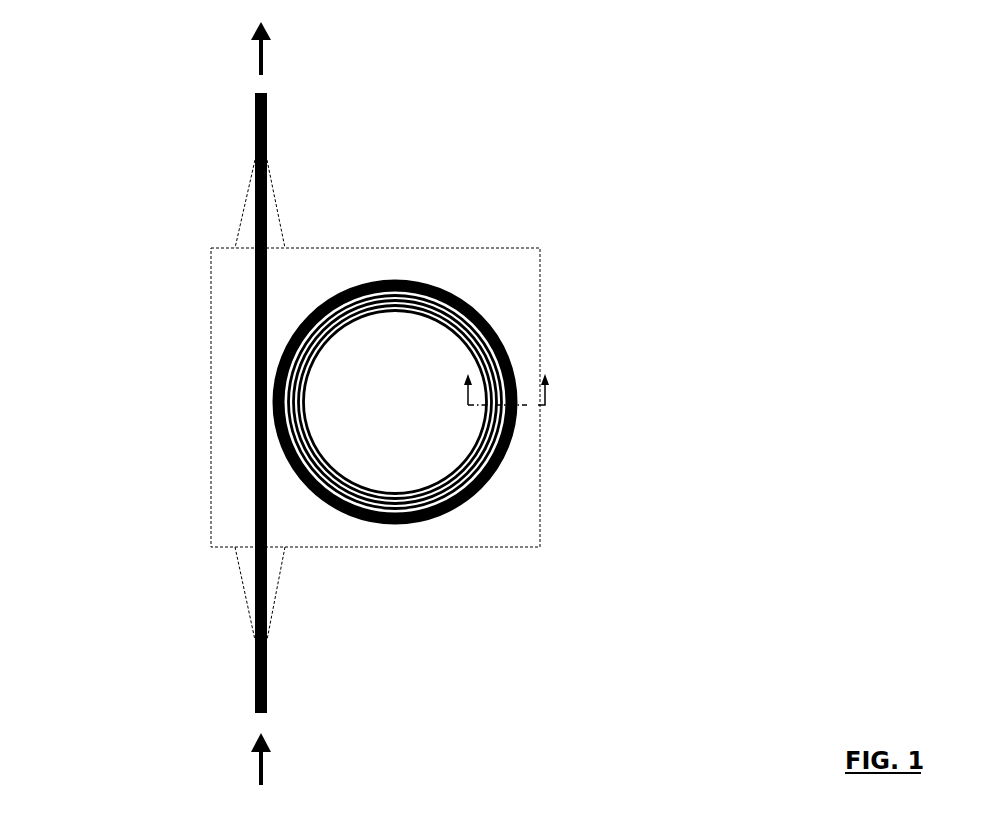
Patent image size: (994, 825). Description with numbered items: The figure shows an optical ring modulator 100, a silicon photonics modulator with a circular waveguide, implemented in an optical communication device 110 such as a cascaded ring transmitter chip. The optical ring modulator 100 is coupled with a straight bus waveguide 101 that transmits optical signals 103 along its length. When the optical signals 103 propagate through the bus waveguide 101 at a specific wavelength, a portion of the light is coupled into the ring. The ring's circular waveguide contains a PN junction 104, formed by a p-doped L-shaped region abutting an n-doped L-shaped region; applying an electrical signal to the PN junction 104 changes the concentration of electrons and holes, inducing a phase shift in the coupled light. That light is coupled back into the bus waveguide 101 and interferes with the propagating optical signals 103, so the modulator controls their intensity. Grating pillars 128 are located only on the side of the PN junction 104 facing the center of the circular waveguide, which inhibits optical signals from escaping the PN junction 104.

The optical communication device 110 is at (121, 127).
The optical ring modulator 100 is at (537, 302).
The bus waveguide 101 is at (265, 656).
The optical signals 103 is at (261, 59).
The PN junction 104 is at (443, 290).
The grating pillars 128 is at (305, 412).